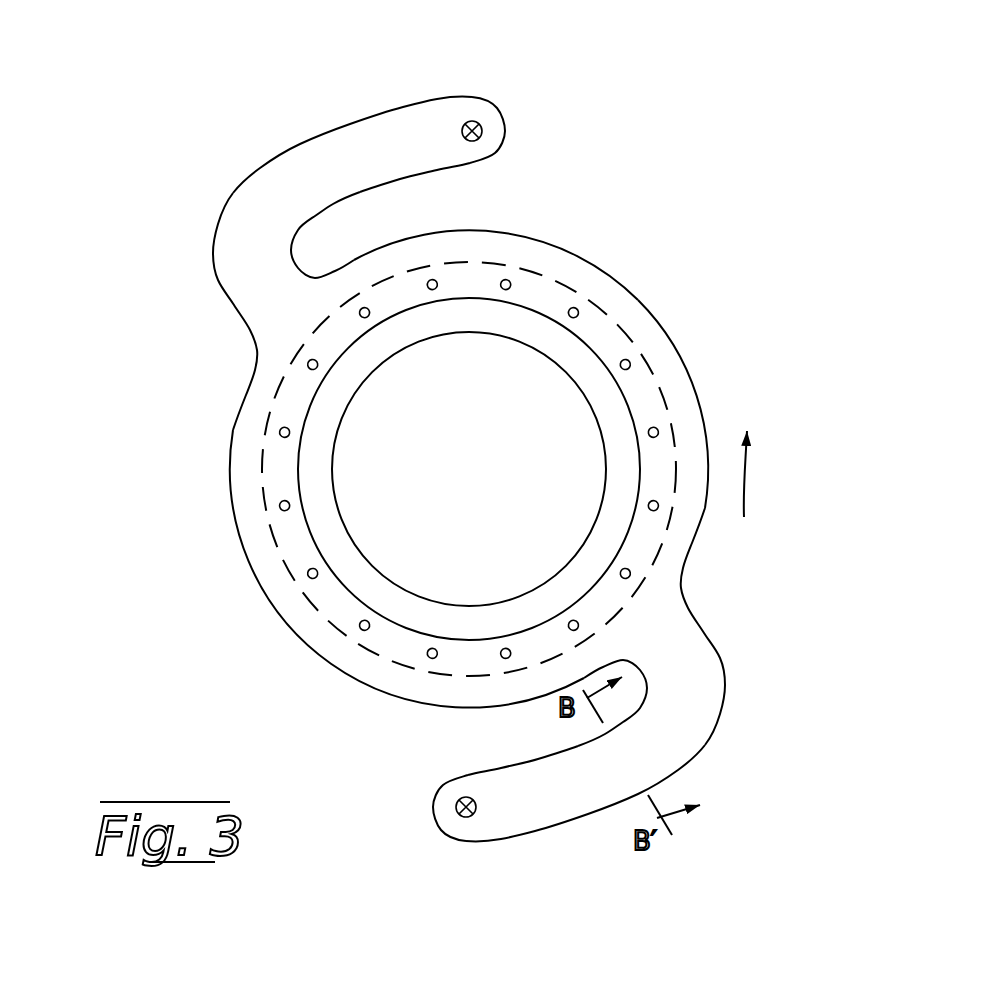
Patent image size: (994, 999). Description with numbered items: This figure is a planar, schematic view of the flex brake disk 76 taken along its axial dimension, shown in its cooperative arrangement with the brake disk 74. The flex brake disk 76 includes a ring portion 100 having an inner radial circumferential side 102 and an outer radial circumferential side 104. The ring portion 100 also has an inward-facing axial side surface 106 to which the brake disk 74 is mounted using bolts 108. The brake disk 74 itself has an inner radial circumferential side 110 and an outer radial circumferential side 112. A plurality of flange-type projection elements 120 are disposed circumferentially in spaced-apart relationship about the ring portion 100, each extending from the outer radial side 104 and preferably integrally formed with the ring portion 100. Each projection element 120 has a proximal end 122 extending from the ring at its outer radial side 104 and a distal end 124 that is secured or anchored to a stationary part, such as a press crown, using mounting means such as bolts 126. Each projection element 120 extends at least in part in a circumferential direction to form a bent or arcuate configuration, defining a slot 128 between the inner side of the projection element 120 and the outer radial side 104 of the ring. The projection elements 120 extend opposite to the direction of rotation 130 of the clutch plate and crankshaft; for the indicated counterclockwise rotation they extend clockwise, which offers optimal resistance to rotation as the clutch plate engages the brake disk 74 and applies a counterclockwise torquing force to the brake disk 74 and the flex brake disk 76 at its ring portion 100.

The brake disk 74 is at (283, 453).
The flex brake disk 76 is at (180, 155).
The ring portion 100 is at (571, 273).
The inner radial circumferential side 102 is at (588, 343).
The outer radial circumferential side 104 is at (532, 241).
The axial side surface 106 is at (676, 358).
The bolts 108 is at (307, 577).
The inner radial circumferential side 110 is at (340, 418).
The outer radial circumferential side 112 is at (262, 493).
The projection element 120 is at (402, 100).
The proximal end 122 is at (210, 285).
The distal end 124 is at (498, 107).
The bolts 126 is at (473, 121).
The slot 128 is at (383, 223).
The direction of rotation 130 is at (749, 473).